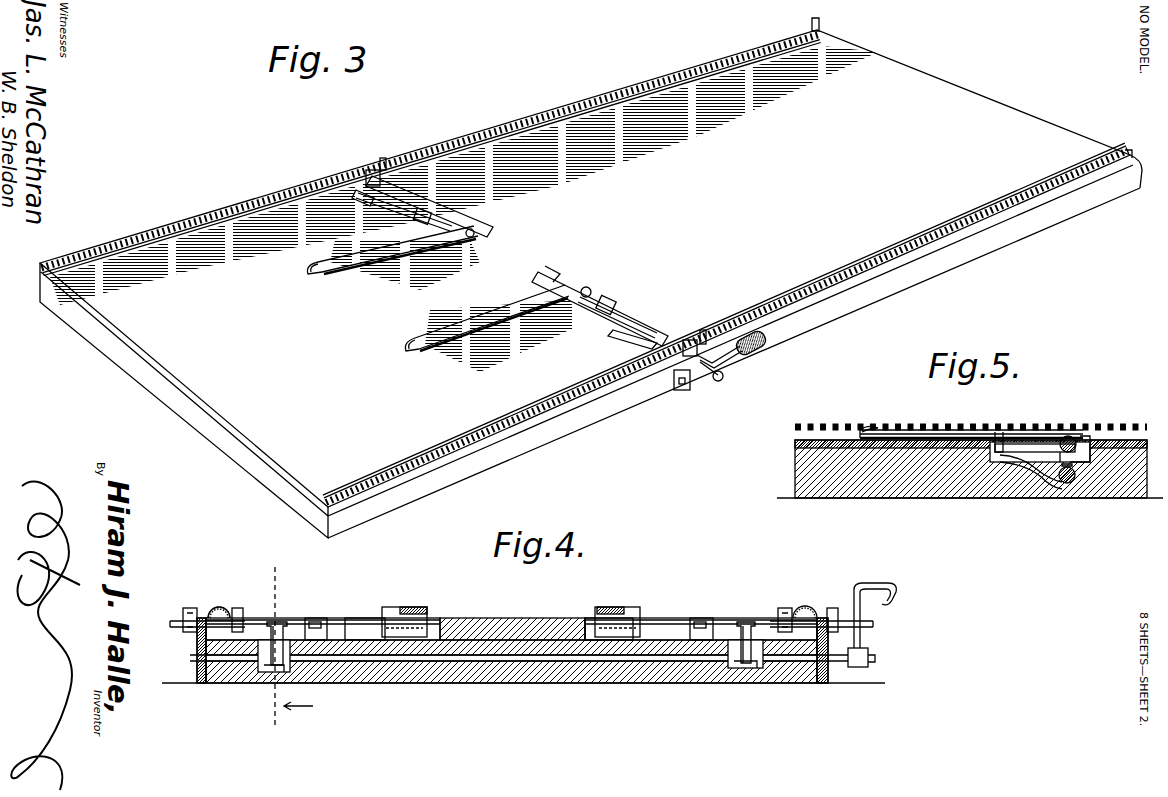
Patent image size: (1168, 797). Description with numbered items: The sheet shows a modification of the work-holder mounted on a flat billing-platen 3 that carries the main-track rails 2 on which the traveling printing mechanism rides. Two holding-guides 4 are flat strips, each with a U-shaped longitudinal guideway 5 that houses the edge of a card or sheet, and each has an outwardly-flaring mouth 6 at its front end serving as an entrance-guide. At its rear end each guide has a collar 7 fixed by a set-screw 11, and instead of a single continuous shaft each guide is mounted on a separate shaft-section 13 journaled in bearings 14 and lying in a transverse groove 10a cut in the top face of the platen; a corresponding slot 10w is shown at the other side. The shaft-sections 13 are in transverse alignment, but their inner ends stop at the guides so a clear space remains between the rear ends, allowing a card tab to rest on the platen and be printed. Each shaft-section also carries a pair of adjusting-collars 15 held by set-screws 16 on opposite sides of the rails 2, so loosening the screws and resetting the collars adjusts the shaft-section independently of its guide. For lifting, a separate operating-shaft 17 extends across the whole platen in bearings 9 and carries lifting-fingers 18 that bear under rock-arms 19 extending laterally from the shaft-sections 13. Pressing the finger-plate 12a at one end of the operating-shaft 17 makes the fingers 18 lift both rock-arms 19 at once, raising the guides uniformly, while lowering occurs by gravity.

In FIG. 3, the main-track rails 2 is at (198, 230).
In FIG. 4, the main-track rails 2 is at (220, 608).
In FIG. 5, the main-track rails 2 is at (826, 425).
In FIG. 3, the flat platen 3 is at (591, 278).
In FIG. 5, the flat platen 3 is at (797, 438).
In FIG. 3, the holding-guides 4 is at (360, 258).
In FIG. 4, the holding-guides 4 is at (420, 608).
In FIG. 5, the holding-guides 4 is at (948, 430).
In FIG. 3, the longitudinal guideway 5 is at (392, 265).
In FIG. 4, the longitudinal guideway 5 is at (428, 611).
In FIG. 5, the longitudinal guideway 5 is at (905, 434).
In FIG. 3, the outwardly-flaring mouths 6 is at (310, 268).
In FIG. 5, the outwardly-flaring mouths 6 is at (865, 430).
In FIG. 3, the collars 7 is at (488, 228).
In FIG. 4, the collars 7 is at (398, 620).
In FIG. 5, the collars 7 is at (1088, 440).
In FIG. 3, the bearings 9 is at (690, 386).
In FIG. 4, the bearings 9 is at (200, 680).
In FIG. 4, the transverse groove 10a is at (335, 632).
In FIG. 4, the slot 10w is at (648, 637).
In FIG. 3, the set-screws 11 is at (470, 228).
In FIG. 5, the set-screws 11 is at (1076, 438).
In FIG. 3, the finger-plate 12a is at (768, 346).
In FIG. 4, the finger-plate 12a is at (890, 586).
In FIG. 3, the shaft-sections 13 is at (410, 208).
In FIG. 4, the shaft-sections 13 is at (355, 620).
In FIG. 5, the shaft-sections 13 is at (1068, 436).
In FIG. 3, the bearings 14 is at (417, 215).
In FIG. 4, the bearings 14 is at (320, 611).
In FIG. 3, the adjusting-collars 15 is at (384, 162).
In FIG. 4, the adjusting-collars 15 is at (180, 620).
In FIG. 3, the set-screws 16 is at (370, 170).
In FIG. 4, the set-screws 16 is at (190, 608).
In FIG. 4, the operating-shaft 17 is at (480, 680).
In FIG. 5, the operating-shaft 17 is at (1068, 484).
In FIG. 4, the lifting-fingers 18 is at (266, 662).
In FIG. 5, the lifting-fingers 18 is at (1030, 468).
In FIG. 3, the rock-arms 19 is at (362, 202).
In FIG. 4, the rock-arms 19 is at (278, 620).
In FIG. 5, the rock-arms 19 is at (1000, 432).